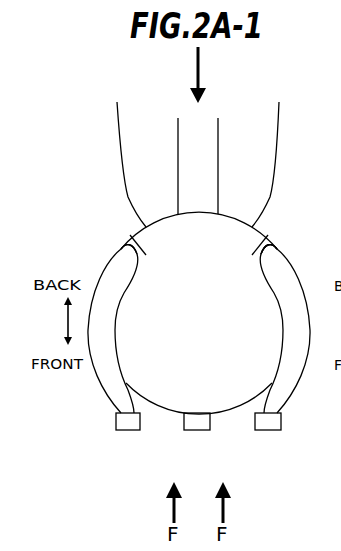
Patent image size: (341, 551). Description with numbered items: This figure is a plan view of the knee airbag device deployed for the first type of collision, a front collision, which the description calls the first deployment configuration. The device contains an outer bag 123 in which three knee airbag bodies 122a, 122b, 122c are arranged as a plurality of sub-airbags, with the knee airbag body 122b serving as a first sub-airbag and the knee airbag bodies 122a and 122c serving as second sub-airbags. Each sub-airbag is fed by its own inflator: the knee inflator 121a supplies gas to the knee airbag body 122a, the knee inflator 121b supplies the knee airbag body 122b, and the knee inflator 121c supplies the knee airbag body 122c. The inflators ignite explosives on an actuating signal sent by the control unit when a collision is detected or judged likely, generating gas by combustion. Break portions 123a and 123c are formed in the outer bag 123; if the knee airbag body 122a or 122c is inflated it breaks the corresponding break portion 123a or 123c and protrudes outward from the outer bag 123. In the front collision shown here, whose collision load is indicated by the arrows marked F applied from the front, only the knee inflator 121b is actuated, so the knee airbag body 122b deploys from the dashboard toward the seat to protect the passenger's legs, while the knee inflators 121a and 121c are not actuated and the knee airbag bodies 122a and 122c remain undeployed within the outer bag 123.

The knee inflator 121a is at (127, 431).
The knee inflator 121b is at (198, 432).
The knee inflator 121c is at (268, 432).
The knee airbag body 122a is at (100, 329).
The knee airbag body 122b is at (160, 388).
The knee airbag body 122c is at (299, 329).
The outer bag 123 is at (299, 241).
The break portion 123a is at (119, 225).
The break portion 123c is at (281, 224).